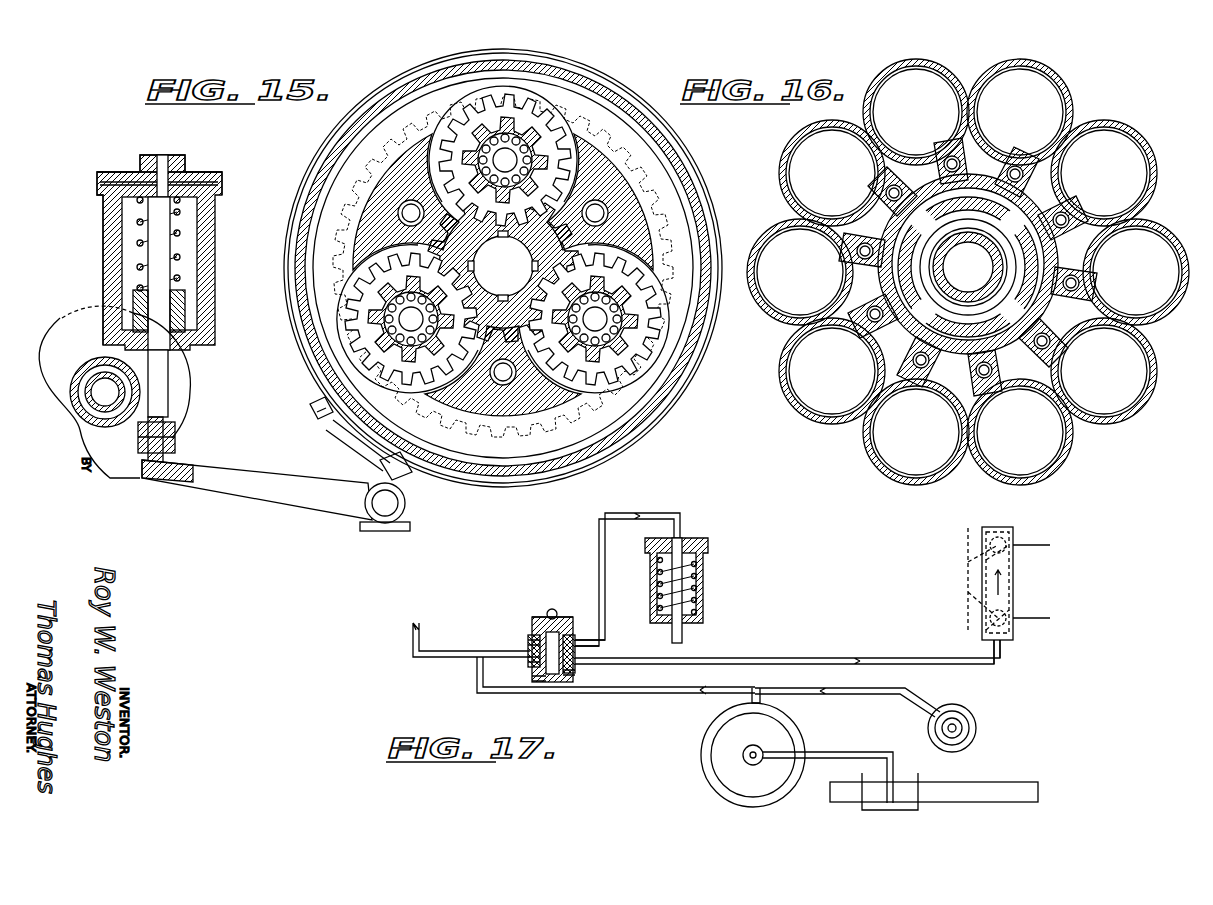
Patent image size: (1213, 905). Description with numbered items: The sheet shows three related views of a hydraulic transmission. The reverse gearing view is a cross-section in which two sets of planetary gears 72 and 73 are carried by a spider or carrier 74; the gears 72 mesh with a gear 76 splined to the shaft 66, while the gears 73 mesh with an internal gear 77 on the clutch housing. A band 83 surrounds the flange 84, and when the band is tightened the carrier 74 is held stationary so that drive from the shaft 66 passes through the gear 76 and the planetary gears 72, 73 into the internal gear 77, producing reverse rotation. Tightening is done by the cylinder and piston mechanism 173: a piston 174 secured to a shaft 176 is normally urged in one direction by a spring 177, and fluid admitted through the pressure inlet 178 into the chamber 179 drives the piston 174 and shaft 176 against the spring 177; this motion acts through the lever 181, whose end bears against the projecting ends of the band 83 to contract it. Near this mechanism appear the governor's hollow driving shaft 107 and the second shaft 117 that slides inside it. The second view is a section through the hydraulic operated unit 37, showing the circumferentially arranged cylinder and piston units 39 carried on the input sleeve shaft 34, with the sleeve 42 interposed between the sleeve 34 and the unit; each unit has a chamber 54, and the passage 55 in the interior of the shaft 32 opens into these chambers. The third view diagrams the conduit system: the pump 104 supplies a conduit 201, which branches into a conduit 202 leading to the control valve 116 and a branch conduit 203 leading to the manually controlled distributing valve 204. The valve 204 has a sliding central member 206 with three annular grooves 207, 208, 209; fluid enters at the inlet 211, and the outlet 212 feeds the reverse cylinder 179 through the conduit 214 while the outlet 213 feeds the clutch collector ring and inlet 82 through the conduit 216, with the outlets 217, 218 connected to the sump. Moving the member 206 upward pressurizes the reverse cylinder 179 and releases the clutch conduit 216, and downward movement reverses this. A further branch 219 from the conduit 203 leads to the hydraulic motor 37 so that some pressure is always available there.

In FIG. 16, the shaft 32 is at (1004, 271).
In FIG. 16, the input sleeve shaft 34 is at (1023, 231).
In FIG. 16, the hydraulic operated unit 37 is at (1080, 108).
In FIG. 16, the cylinder and piston unit 39 is at (1023, 77).
In FIG. 16, the sleeve 42 is at (1048, 300).
In FIG. 16, the chamber 54 is at (1037, 181).
In FIG. 16, the passage 55 is at (968, 267).
In FIG. 15, the shaft 66 is at (503, 266).
In FIG. 15, the planetary gears 72 is at (496, 116).
In FIG. 15, the planetary gears 73 is at (542, 104).
In FIG. 15, the spider 74 is at (625, 195).
In FIG. 15, the gear 76 is at (564, 249).
In FIG. 15, the internal gear 77 is at (510, 92).
In FIG. 17, the conduit 82 is at (968, 562).
In FIG. 15, the band 83 is at (677, 402).
In FIG. 15, the flange 84 is at (666, 140).
In FIG. 17, the pump 104 is at (704, 755).
In FIG. 15, the driving shaft 107 is at (92, 407).
In FIG. 17, the control valve 116 is at (977, 731).
In FIG. 15, the shaft 117 is at (103, 388).
In FIG. 15, the cylinder and piston mechanism 173 is at (222, 192).
In FIG. 15, the piston 174 is at (222, 180).
In FIG. 15, the shaft 176 is at (155, 255).
In FIG. 15, the spring 177 is at (137, 222).
In FIG. 15, the pressure inlet 178 is at (163, 160).
In FIG. 15, the chamber 179 is at (97, 173).
In FIG. 17, the chamber 179 is at (703, 540).
In FIG. 15, the lever 181 is at (293, 500).
In FIG. 17, the conduit 201 is at (760, 700).
In FIG. 17, the conduit 202 is at (833, 695).
In FIG. 17, the branch conduit 203 is at (477, 687).
In FIG. 17, the distributing valve 204 is at (558, 612).
In FIG. 17, the sliding central member 206 is at (546, 616).
In FIG. 17, the annular groove 207 is at (534, 635).
In FIG. 17, the annular groove 208 is at (547, 660).
In FIG. 17, the annular groove 209 is at (568, 675).
In FIG. 17, the inlet 211 is at (532, 655).
In FIG. 17, the outlet 212 is at (580, 645).
In FIG. 17, the outlet 213 is at (657, 663).
In FIG. 17, the conduit 214 is at (657, 517).
In FIG. 17, the conduit 216 is at (1000, 655).
In FIG. 17, the outlet 217 is at (530, 643).
In FIG. 17, the outlet 218 is at (532, 672).
In FIG. 17, the branch 219 is at (430, 653).